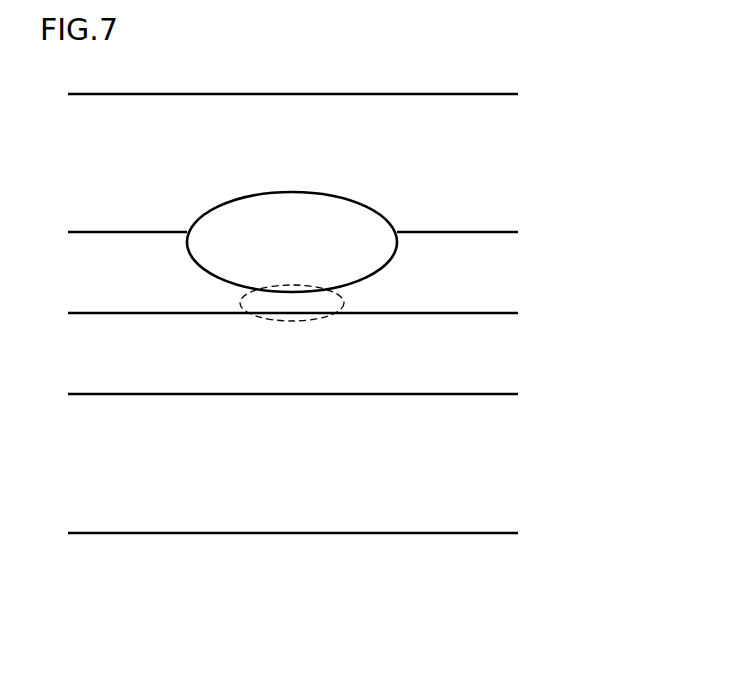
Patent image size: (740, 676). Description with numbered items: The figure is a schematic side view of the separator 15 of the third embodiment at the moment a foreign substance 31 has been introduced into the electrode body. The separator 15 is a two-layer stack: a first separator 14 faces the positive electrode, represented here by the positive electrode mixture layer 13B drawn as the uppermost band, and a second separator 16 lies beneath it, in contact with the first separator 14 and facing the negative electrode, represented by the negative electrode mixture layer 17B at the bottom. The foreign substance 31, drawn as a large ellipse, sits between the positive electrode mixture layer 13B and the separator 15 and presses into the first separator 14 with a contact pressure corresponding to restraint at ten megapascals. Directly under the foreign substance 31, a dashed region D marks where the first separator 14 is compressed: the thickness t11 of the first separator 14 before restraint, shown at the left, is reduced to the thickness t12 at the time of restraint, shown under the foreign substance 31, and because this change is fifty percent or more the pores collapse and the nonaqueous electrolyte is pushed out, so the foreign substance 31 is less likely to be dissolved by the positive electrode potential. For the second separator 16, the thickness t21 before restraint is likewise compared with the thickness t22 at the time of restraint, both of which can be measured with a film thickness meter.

The positive electrode mixture layer 13B is at (507, 166).
The first separator 14 is at (507, 274).
The separator 15 is at (568, 261).
The second separator 16 is at (507, 355).
The negative electrode mixture layer 17B is at (507, 467).
The foreign substance 31 is at (305, 215).
The region D is at (274, 321).
The thickness of first separator before restraint t11 is at (107, 233).
The thickness of second separator before restraint t21 is at (107, 314).
The thickness of first separator at time of restraint t12 is at (292, 293).
The thickness of second separator at time of restraint t22 is at (292, 313).